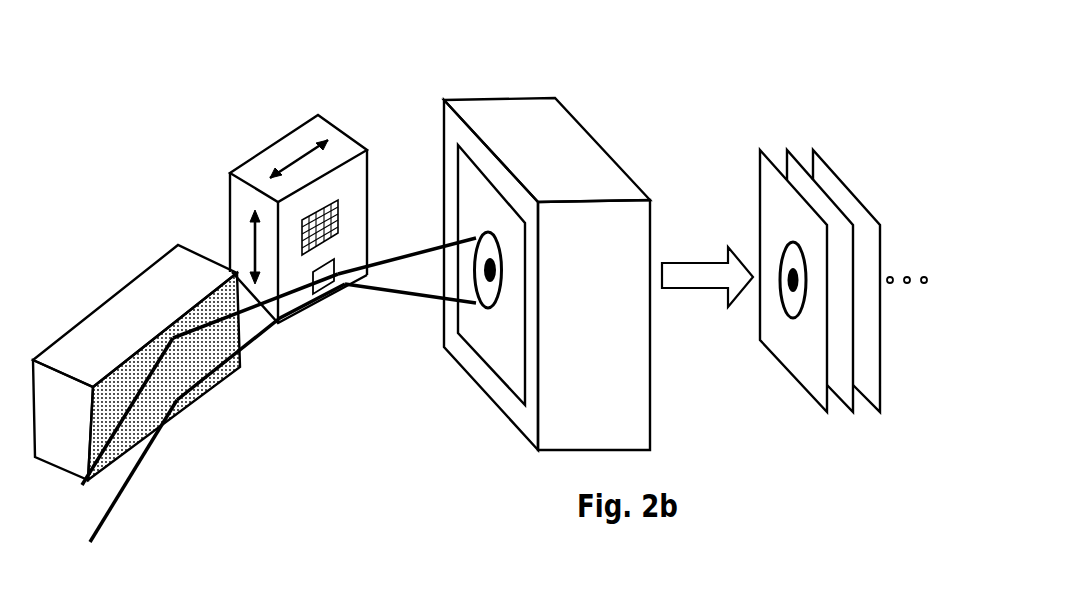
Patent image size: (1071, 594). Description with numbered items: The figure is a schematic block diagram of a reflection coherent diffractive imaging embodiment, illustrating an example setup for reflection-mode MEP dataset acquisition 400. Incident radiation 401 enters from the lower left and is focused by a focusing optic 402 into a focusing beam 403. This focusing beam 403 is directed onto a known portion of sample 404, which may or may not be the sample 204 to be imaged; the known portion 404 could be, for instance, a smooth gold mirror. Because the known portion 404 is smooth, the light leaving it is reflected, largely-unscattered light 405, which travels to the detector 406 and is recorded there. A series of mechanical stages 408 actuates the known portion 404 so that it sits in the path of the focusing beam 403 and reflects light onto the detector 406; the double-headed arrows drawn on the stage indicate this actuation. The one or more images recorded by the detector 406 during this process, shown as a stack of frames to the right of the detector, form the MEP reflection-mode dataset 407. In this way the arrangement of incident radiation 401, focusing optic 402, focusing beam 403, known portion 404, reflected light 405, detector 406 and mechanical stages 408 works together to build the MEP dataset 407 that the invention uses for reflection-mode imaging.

The reflection-mode MEP dataset acquisition system 400 is at (472, 34).
The incident radiation 401 is at (107, 440).
The focusing optic 402 is at (136, 362).
The focusing beam 403 is at (259, 337).
The known portion of sample 404 is at (343, 298).
The reflected, largely-unscattered light 405 is at (407, 287).
The detector 406 is at (547, 274).
The MEP reflection-mode dataset 407 is at (843, 304).
The mechanical stages 408 is at (298, 213).
The sample to be imaged 204 is at (348, 227).